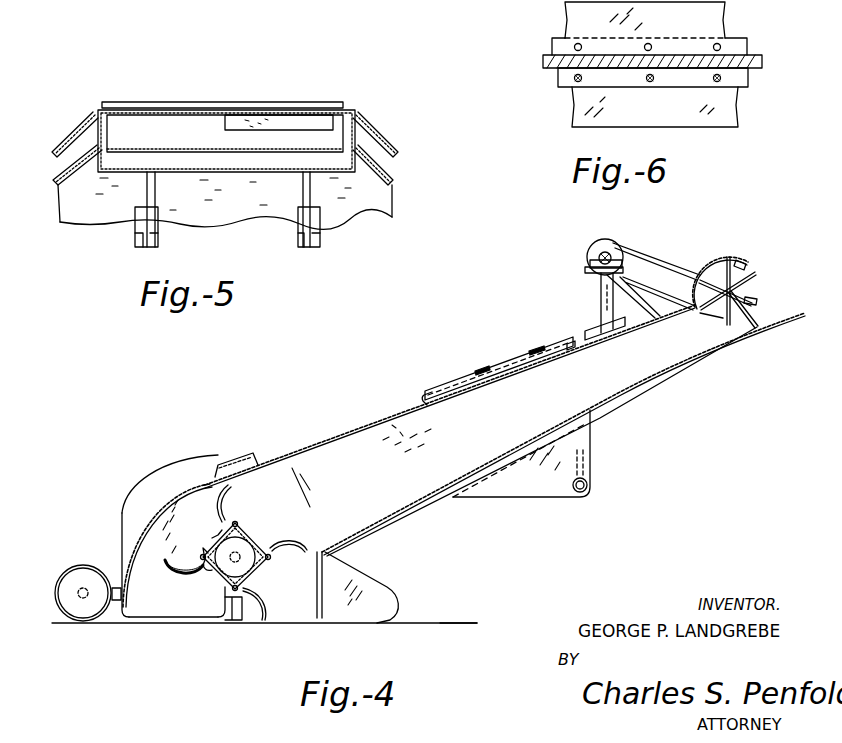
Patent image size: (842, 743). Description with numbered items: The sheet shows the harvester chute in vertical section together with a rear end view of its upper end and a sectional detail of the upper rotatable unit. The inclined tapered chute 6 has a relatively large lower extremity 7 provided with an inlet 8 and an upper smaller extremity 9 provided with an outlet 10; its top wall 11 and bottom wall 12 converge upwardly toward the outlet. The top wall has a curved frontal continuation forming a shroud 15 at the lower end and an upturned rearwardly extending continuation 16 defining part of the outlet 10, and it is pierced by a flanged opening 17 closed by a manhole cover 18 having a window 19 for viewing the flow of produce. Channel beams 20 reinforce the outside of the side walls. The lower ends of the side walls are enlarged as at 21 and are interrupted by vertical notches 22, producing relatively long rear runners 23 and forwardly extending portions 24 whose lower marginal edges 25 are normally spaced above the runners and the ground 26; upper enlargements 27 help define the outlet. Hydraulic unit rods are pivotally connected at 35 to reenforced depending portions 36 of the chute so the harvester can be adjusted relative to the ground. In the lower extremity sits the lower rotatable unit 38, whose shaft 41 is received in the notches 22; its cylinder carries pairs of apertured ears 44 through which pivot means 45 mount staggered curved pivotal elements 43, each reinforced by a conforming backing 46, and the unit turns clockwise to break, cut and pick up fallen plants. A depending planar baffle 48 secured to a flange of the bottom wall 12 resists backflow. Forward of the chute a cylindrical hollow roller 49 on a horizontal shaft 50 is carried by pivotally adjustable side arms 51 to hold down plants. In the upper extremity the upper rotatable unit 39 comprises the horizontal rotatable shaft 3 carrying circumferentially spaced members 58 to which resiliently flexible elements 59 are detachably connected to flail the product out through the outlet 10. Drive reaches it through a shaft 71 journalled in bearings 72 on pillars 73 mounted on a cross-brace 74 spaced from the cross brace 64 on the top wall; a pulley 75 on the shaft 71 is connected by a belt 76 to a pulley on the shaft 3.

In FIG. 6, the horizontal rotatable shaft 3 is at (763, 61).
In FIG. 4, the horizontal rotatable shaft 3 is at (752, 296).
In FIG. 4, the inclined tapered chute 6 is at (392, 438).
In FIG. 4, the lower extremity 7 is at (158, 510).
In FIG. 4, the inlet 8 is at (215, 610).
In FIG. 4, the upper smaller extremity 9 is at (672, 355).
In FIG. 5, the outlet 10 is at (350, 112).
In FIG. 4, the outlet 10 is at (742, 270).
In FIG. 4, the top wall 11 is at (348, 432).
In FIG. 5, the bottom wall 12 is at (362, 214).
In FIG. 4, the bottom wall 12 is at (412, 503).
In FIG. 4, the shroud 15 is at (140, 532).
In FIG. 4, the upturned rearwardly extending continuation 16 is at (708, 262).
In FIG. 4, the flanged opening 17 is at (432, 392).
In FIG. 5, the manhole cover 18 is at (163, 103).
In FIG. 4, the manhole cover 18 is at (458, 384).
In FIG. 5, the window 19 is at (283, 113).
In FIG. 4, the window 19 is at (515, 363).
In FIG. 5, the channel beams 20 is at (70, 133).
In FIG. 4, the enlargements 21 is at (198, 497).
In FIG. 4, the vertical notches 22 is at (232, 622).
In FIG. 4, the rear runners 23 is at (312, 624).
In FIG. 4, the forwardly extending portions 24 is at (162, 605).
In FIG. 4, the lower marginal edges 25 is at (188, 618).
In FIG. 4, the ground 26 is at (460, 622).
In FIG. 4, the enlargements 27 is at (700, 292).
In FIG. 5, the pivotal connection 35 is at (147, 245).
In FIG. 4, the pivotal connection 35 is at (588, 485).
In FIG. 4, the reenforced depending portions 36 is at (585, 437).
In FIG. 4, the lower rotatable unit 38 is at (264, 527).
In FIG. 4, the upper rotatable unit 39 is at (760, 278).
In FIG. 4, the shaft 41 is at (255, 565).
In FIG. 4, the pivotal elements 43 is at (232, 490).
In FIG. 4, the apertured ears 44 is at (238, 522).
In FIG. 4, the pivot means 45 is at (222, 533).
In FIG. 4, the backing 46 is at (292, 542).
In FIG. 4, the depending planar baffle 48 is at (325, 613).
In FIG. 4, the cylindrical hollow roller 49 is at (62, 575).
In FIG. 4, the horizontal shaft 50 is at (78, 593).
In FIG. 4, the side arms 51 is at (112, 600).
In FIG. 6, the members 58 is at (748, 40).
In FIG. 4, the members 58 is at (706, 312).
In FIG. 6, the elements 59 is at (722, 12).
In FIG. 4, the elements 59 is at (740, 263).
In FIG. 4, the cross brace 64 is at (240, 455).
In FIG. 4, the shaft 71 is at (598, 259).
In FIG. 4, the bearings 72 is at (592, 253).
In FIG. 4, the pillars 73 is at (600, 305).
In FIG. 4, the cross-brace 74 is at (588, 333).
In FIG. 4, the pulley 75 is at (604, 242).
In FIG. 4, the belt 76 is at (665, 250).